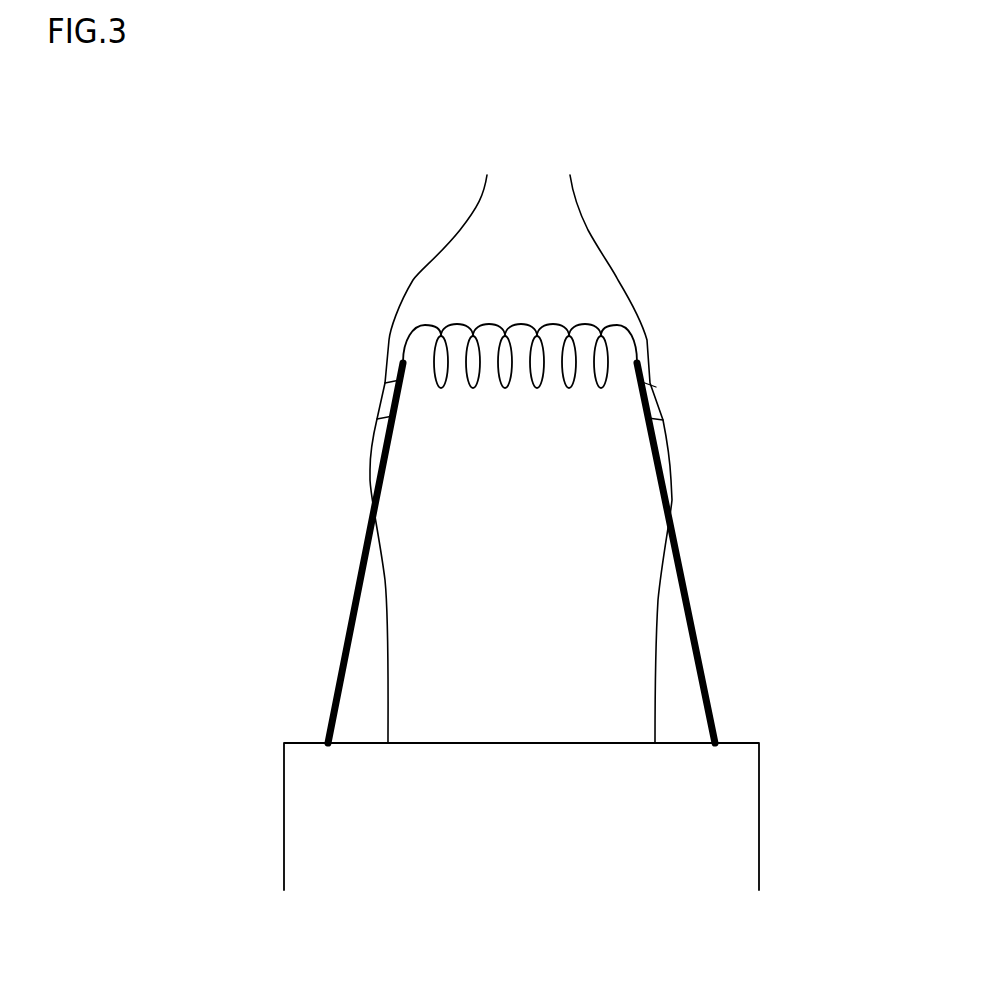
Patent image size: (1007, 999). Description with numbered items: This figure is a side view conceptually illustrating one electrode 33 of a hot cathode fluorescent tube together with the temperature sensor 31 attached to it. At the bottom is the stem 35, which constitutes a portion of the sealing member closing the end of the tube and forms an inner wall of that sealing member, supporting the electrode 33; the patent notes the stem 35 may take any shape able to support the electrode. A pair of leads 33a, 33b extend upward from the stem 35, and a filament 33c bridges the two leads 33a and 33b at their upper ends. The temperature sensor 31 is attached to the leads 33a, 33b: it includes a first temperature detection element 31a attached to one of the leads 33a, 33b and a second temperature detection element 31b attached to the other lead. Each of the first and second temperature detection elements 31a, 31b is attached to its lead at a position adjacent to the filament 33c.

The temperature sensor 31 is at (597, 150).
The first temperature detection element 31a is at (441, 444).
The second temperature detection element 31b is at (613, 444).
The electrode 33 is at (885, 388).
The lead 33a is at (347, 655).
The lead 33b is at (668, 518).
The filament 33c is at (569, 388).
The stem 35 is at (737, 743).